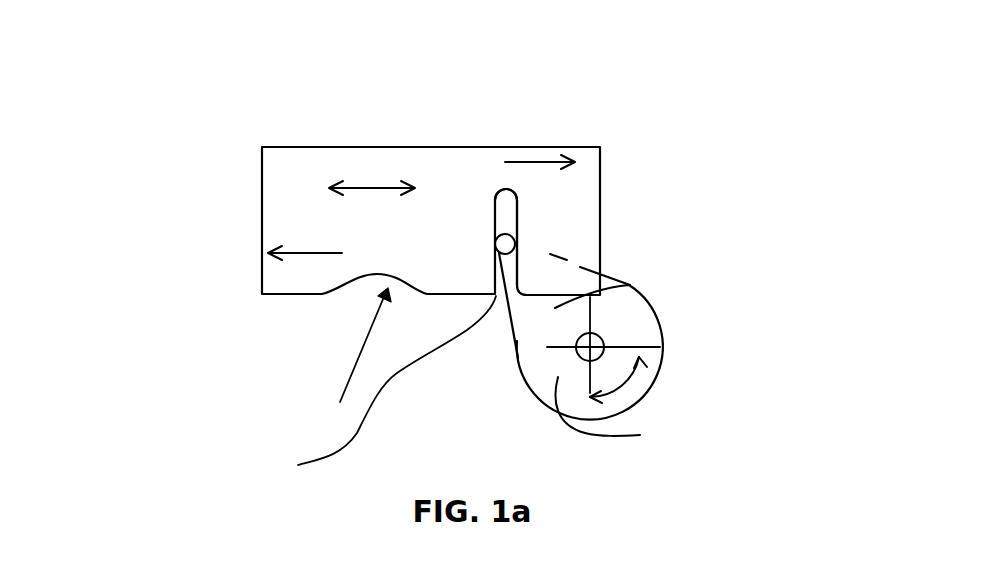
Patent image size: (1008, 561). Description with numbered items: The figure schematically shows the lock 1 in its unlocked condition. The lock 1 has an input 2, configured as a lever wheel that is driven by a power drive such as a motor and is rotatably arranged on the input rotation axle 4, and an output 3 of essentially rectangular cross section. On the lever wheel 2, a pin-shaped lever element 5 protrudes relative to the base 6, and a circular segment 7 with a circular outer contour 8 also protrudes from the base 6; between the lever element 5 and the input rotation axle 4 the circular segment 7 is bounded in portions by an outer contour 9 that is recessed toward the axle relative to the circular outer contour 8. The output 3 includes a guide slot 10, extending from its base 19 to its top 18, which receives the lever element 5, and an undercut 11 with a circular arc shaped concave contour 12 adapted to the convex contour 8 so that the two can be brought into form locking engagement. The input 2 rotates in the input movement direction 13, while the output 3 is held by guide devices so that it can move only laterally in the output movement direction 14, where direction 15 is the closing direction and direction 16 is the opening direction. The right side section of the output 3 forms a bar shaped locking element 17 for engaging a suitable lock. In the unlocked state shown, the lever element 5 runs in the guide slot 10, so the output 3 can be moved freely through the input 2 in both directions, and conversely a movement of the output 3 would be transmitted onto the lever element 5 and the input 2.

The lock 1 is at (620, 125).
The input 2 is at (628, 330).
The output 3 is at (310, 218).
The input rotation axle 4 is at (660, 347).
The lever element 5 is at (498, 245).
The base 6 is at (575, 337).
The circular segment 7 is at (640, 435).
The circular outer contour 8 is at (650, 395).
The outer contour 9 is at (572, 329).
The guide slot 10 is at (507, 212).
The undercut 11 is at (352, 365).
The concave contour 12 is at (370, 283).
The input movement direction 13 is at (622, 411).
The output movement direction 14 is at (375, 186).
The closing direction 15 is at (531, 163).
The opening direction 16 is at (313, 253).
The locking element 17 is at (590, 184).
The top of the guide slot 18 is at (502, 190).
The base of the guide slot 19 is at (369, 389).